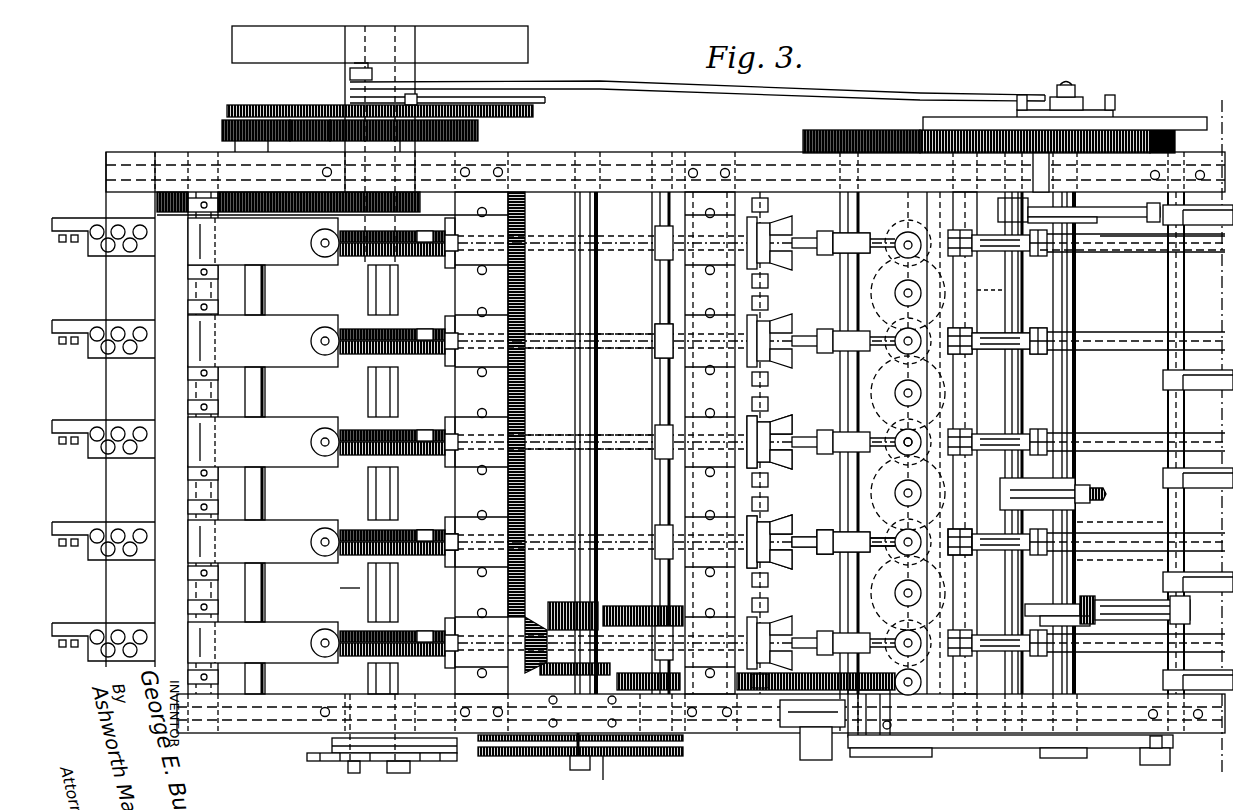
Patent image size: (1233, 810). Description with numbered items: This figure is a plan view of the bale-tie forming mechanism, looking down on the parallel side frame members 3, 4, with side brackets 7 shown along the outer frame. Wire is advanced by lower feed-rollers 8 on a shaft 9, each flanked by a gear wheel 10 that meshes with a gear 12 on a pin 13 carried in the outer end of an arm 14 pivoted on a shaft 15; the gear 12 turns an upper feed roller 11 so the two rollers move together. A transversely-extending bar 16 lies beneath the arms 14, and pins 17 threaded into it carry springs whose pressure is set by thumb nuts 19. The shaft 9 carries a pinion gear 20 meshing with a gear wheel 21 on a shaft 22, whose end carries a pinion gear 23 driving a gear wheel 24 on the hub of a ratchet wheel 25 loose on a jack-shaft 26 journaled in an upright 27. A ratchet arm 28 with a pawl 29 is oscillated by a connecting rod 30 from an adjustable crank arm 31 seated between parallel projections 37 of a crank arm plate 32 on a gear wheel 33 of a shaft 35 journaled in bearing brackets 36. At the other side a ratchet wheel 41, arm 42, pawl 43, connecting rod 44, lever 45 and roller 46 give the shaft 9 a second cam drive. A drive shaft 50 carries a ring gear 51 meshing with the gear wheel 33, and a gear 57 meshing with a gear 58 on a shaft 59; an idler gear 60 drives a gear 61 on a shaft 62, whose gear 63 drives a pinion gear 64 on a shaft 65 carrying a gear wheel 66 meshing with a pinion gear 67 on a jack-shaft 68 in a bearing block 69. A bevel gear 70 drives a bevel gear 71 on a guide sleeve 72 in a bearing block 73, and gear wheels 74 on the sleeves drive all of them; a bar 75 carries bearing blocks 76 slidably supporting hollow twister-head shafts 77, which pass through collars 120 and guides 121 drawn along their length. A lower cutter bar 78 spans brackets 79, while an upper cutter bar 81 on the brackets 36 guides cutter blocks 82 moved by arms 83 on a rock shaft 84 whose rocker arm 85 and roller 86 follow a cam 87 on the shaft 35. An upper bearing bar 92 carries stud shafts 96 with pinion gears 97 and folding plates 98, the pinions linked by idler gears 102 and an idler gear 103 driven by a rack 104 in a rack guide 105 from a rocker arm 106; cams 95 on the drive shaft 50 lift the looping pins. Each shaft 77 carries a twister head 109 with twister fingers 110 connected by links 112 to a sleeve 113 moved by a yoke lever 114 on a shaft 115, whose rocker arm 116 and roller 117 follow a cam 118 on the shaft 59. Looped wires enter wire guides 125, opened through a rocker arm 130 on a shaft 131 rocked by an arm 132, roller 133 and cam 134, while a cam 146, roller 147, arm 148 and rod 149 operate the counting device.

The side frame member 3 is at (235, 722).
The side frame member 4 is at (601, 162).
The side bracket 7 is at (83, 318).
The feed-roller 8 is at (434, 536).
The shaft 9 is at (398, 490).
The gear wheel 10 is at (430, 556).
The feed roller 11 is at (402, 333).
The gear 12 is at (420, 333).
The pin 13 is at (398, 283).
The arm 14 is at (282, 412).
The shaft 15 is at (192, 590).
The transversely-extending bar 16 is at (335, 602).
The pin 17 is at (311, 541).
The thumb nut 19 is at (313, 530).
The pinion gear 20 is at (407, 207).
The gear wheel 21 is at (170, 190).
The shaft 22 is at (265, 300).
The pinion gear 23 is at (222, 128).
The gear wheel 24 is at (310, 118).
The ratchet wheel 25 is at (258, 105).
The jack-shaft 26 is at (396, 50).
The upright 27 is at (528, 50).
The ratchet arm 28 is at (380, 76).
The pawl 29 is at (350, 99).
The connecting rod 30 is at (638, 81).
The adjustable crank arm 31 is at (1102, 110).
The crank arm plate 32 is at (1135, 120).
The gear wheel 33 is at (1160, 130).
The shaft 35 is at (1078, 298).
The bearing bracket 36 is at (1045, 150).
The elongated parallel projection 37 is at (1020, 96).
The ratchet wheel 41 is at (422, 762).
The arm 42 is at (393, 773).
The pawl 43 is at (353, 773).
The connecting rod 44 is at (462, 752).
The lever 45 is at (1170, 760).
The roller 46 is at (1170, 752).
The drive shaft 50 is at (907, 130).
The ring gear 51 is at (846, 130).
The gear 57 is at (885, 748).
The gear 58 is at (852, 742).
The shaft 59 is at (845, 614).
The idler gear 60 is at (815, 695).
The gear 61 is at (648, 695).
The shaft 62 is at (652, 573).
The gear 63 is at (625, 606).
The pinion gear 64 is at (570, 600).
The shaft 65 is at (598, 484).
The gear wheel 66 is at (505, 742).
The pinion gear 67 is at (556, 757).
The jack-shaft 68 is at (578, 771).
The bearing block 69 is at (606, 768).
The bevel gear 70 is at (545, 680).
The bevel gear 71 is at (540, 618).
The guide sleeve 72 is at (448, 370).
The bearing block 73 is at (522, 490).
The gear wheel 74 is at (526, 378).
The transversely-extending bar 75 is at (688, 292).
The bearing block 76 is at (700, 380).
The hollow twister-head shaft 77 is at (611, 333).
The lower cutter bar 78 is at (950, 394).
The bracket 79 is at (932, 186).
The upper cutter bar 81 is at (977, 302).
The cutter block 82 is at (960, 430).
The arm 83 is at (980, 336).
The rock shaft 84 is at (1020, 400).
The rocker arm 85 is at (1040, 480).
The roller 86 is at (1081, 487).
The cam 87 is at (1104, 492).
The upper bearing bar 92 is at (906, 212).
The cam 95 is at (895, 250).
The stud shaft 96 is at (915, 456).
The pinion gear 97 is at (895, 440).
The folding plate 98 is at (892, 452).
The idler gear 102 is at (950, 592).
The idler gear 103 is at (896, 672).
The rack 104 is at (870, 760).
The rack guide 105 is at (925, 757).
The rocker arm 106 is at (790, 736).
The twister head 109 is at (812, 232).
The twister finger 110 is at (838, 250).
The link 112 is at (796, 458).
The sleeve 113 is at (780, 422).
The yoke lever 114 is at (786, 480).
The shaft 115 is at (784, 400).
The rocker arm 116 is at (750, 592).
The roller 117 is at (790, 586).
The cam 118 is at (796, 598).
The collar 120 is at (655, 230).
The guide 121 is at (735, 330).
The wire guide 125 is at (1110, 532).
The rocker arm 130 is at (1163, 380).
The shaft 131 is at (1175, 406).
The arm 132 is at (1120, 600).
The roller 133 is at (1088, 596).
The cam 134 is at (1035, 604).
The cam 146 is at (1097, 220).
The roller 147 is at (1087, 252).
The arm 148 is at (1137, 254).
The rod 149 is at (1183, 215).